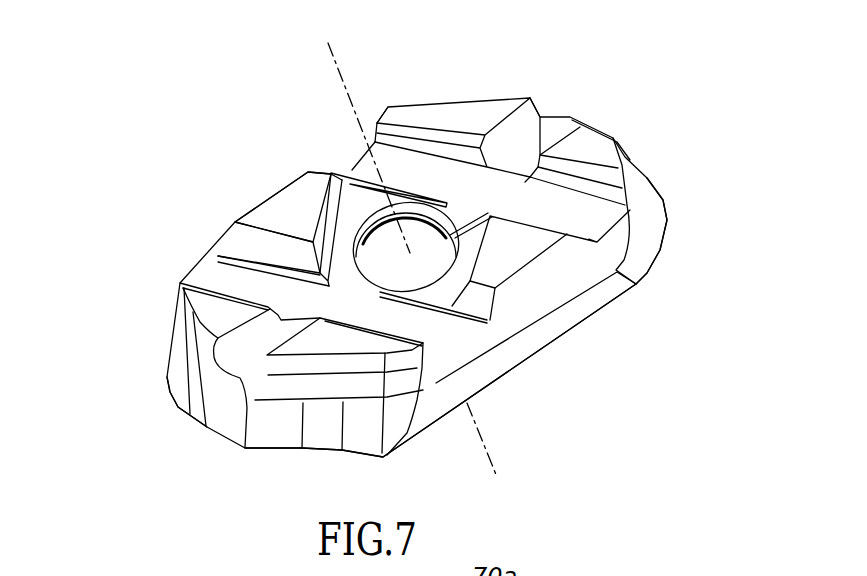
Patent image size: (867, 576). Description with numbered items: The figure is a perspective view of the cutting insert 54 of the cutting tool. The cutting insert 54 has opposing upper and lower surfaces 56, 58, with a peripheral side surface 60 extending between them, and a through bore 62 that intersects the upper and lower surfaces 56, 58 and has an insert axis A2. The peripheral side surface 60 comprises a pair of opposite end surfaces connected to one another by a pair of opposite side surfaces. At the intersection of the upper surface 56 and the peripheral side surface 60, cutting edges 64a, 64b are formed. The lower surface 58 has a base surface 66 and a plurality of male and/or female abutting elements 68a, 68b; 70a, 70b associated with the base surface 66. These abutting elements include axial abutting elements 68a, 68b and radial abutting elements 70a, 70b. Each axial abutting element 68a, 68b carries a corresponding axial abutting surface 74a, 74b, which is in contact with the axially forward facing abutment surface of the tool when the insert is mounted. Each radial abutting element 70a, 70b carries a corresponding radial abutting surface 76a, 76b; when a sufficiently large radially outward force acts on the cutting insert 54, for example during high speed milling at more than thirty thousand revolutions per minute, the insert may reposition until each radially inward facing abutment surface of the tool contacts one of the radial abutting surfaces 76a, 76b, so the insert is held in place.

The cutting insert 54 is at (665, 90).
The upper surface 56 is at (208, 452).
The lower surface 58 is at (252, 203).
The peripheral side surface 60 is at (168, 338).
The through bore 62 is at (400, 232).
The cutting edge 64a is at (668, 222).
The cutting edge 64b is at (172, 398).
The base surface 66 is at (278, 183).
The axial abutting element 68a is at (480, 297).
The axial abutting element 68b is at (350, 148).
The radial abutting element 70a is at (547, 115).
The radial abutting element 70b is at (230, 380).
The axial abutting surface 74a is at (458, 342).
The axial abutting surface 74b is at (330, 172).
The radial abutting surface 76a is at (539, 132).
The radial abutting surface 76b is at (255, 385).
The insert axis A2 is at (413, 265).